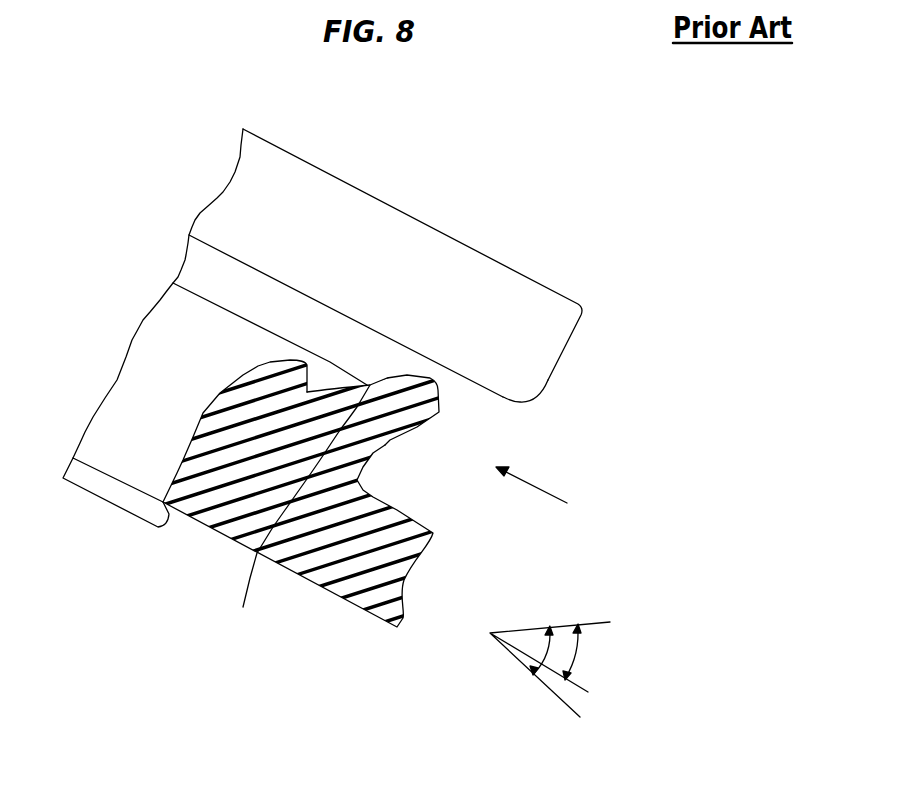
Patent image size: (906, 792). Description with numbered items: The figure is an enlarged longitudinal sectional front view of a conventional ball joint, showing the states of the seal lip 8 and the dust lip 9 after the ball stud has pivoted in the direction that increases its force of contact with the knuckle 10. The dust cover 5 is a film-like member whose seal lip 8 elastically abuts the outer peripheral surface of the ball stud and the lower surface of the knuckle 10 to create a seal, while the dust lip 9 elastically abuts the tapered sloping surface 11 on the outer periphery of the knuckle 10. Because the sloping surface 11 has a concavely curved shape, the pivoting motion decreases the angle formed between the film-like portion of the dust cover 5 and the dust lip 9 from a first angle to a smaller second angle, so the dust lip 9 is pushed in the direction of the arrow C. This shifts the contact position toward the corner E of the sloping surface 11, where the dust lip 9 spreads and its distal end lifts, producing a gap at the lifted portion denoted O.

The dust cover 5 is at (418, 513).
The seal lip 8 is at (193, 422).
The dust lip 9 is at (437, 403).
The knuckle 10 is at (583, 332).
The sloping surface 11 is at (350, 330).
The lifted portion O is at (470, 378).
The corner of the sloping surface E is at (302, 512).
The arrow C is at (544, 497).